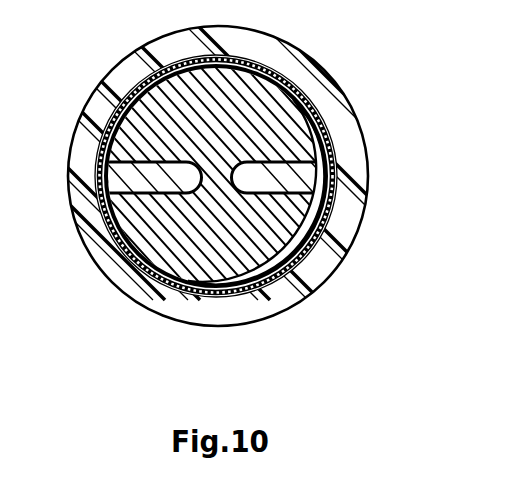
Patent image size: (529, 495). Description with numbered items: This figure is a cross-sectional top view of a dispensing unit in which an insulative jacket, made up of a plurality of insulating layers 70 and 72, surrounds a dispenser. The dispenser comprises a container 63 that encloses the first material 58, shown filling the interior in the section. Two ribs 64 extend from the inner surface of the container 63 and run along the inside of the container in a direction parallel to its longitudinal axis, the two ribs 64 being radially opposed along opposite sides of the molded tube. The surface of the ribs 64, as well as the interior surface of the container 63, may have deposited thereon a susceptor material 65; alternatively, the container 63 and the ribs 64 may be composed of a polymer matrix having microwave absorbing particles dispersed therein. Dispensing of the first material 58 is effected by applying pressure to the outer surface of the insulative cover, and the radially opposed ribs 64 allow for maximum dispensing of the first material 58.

The first material 58 is at (177, 77).
The container 63 is at (262, 262).
The ribs 64 is at (172, 156).
The susceptor material 65 is at (305, 232).
The insulating layer 70 is at (112, 78).
The insulating layer 72 is at (115, 242).